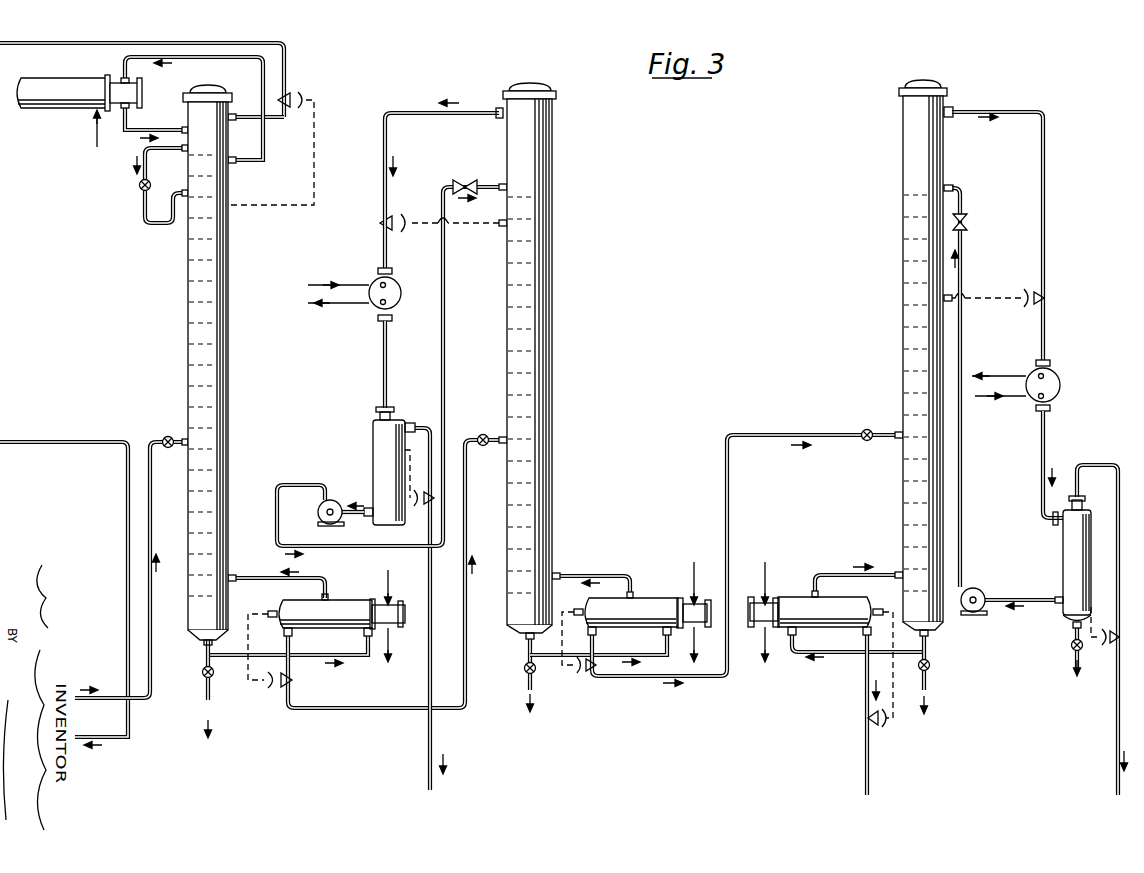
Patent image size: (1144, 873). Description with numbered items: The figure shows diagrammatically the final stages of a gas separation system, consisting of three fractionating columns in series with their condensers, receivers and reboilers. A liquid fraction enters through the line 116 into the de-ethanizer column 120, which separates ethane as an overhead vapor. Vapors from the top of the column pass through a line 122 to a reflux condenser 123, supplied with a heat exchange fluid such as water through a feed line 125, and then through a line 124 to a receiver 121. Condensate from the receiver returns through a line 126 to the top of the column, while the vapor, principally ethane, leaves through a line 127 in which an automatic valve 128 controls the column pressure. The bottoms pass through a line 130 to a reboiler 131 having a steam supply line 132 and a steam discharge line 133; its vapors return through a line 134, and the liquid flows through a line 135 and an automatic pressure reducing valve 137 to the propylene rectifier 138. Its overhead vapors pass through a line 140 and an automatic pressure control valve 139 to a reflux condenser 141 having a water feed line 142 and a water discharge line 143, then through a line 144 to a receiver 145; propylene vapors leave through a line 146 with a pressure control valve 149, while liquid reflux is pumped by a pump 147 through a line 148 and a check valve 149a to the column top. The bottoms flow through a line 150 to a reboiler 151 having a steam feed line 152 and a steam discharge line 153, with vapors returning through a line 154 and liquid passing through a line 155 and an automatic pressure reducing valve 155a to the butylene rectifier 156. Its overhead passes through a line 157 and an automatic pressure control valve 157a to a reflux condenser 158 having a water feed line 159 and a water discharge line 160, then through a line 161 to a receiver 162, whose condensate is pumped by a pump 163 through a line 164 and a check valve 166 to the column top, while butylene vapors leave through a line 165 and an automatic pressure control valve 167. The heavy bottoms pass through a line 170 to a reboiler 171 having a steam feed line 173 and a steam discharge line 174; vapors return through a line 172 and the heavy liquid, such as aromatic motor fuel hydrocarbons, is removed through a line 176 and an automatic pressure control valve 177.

The line 116 is at (80, 700).
The de-ethanizer column 120 is at (188, 401).
The receiver 121 is at (233, 115).
The line 122 is at (252, 163).
The reflux condenser 123 is at (135, 84).
The line 124 is at (124, 133).
The feed line 125 is at (92, 140).
The line 126 is at (146, 210).
The line 127 is at (290, 86).
The automatic valve 128 is at (292, 111).
The line 130 is at (307, 661).
The reboiler 131 is at (342, 606).
The steam supply line 132 is at (391, 586).
The steam discharge line 133 is at (391, 641).
The line 134 is at (250, 576).
The line 135 is at (328, 712).
The automatic pressure reducing valve 137 is at (273, 688).
The propylene rectifier 138 is at (548, 381).
The automatic pressure control valve 139 is at (393, 217).
The line 140 is at (424, 118).
The reflux condenser 141 is at (396, 290).
The water feed line 142 is at (340, 316).
The water discharge line 143 is at (369, 269).
The line 144 is at (382, 364).
The receiver 145 is at (375, 438).
The line 146 is at (429, 674).
The pump 147 is at (334, 500).
The line 148 is at (317, 548).
The pressure control valve 149 is at (425, 508).
The check valve 149a is at (464, 180).
The line 150 is at (548, 662).
The reboiler 151 is at (649, 603).
The steam feed line 152 is at (692, 578).
The steam discharge line 153 is at (692, 637).
The line 154 is at (590, 562).
The line 155 is at (630, 683).
The automatic pressure reducing valve 155a is at (583, 674).
The butylene rectifier 156 is at (903, 478).
The line 157 is at (987, 110).
The automatic pressure control valve 157a is at (1027, 291).
The reflux condenser 158 is at (1055, 381).
The water feed line 159 is at (1009, 398).
The water discharge line 160 is at (1017, 364).
The line 161 is at (1047, 425).
The receiver 162 is at (1063, 553).
The pump 163 is at (987, 589).
The line 164 is at (967, 536).
The line 165 is at (1127, 455).
The check valve 166 is at (968, 221).
The automatic pressure control valve 167 is at (1107, 648).
The line 170 is at (840, 656).
The reboiler 171 is at (850, 597).
The line 172 is at (828, 573).
The steam feed line 173 is at (766, 568).
The steam discharge line 174 is at (764, 640).
The line 176 is at (871, 766).
The automatic pressure control valve 177 is at (885, 722).